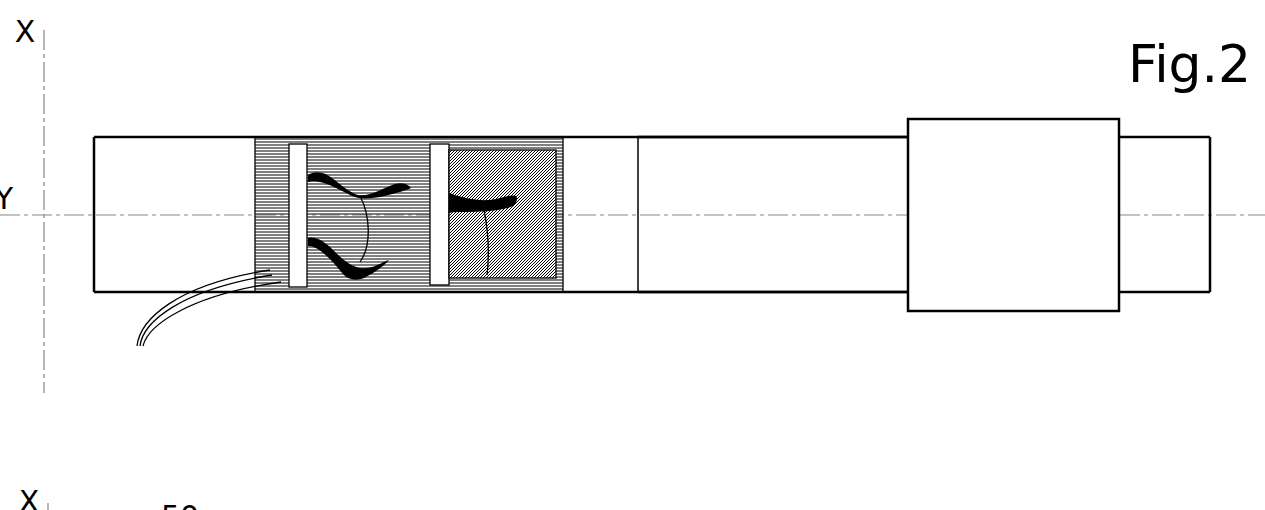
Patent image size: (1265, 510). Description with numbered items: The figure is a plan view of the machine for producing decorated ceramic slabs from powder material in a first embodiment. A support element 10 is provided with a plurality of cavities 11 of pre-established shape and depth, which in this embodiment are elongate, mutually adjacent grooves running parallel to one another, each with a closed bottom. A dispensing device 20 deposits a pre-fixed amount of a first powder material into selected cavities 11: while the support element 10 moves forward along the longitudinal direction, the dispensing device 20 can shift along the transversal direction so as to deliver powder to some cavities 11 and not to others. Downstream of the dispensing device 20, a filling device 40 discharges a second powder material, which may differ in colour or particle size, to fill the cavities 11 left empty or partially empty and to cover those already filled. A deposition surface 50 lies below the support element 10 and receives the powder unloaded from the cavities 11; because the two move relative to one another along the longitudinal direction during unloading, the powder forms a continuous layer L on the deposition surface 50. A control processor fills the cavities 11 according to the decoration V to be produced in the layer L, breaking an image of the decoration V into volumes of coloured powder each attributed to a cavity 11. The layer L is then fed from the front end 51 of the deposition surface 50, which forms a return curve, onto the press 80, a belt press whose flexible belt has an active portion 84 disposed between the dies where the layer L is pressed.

The support element 10 is at (395, 276).
The cavities 11 is at (197, 325).
The dispensing device 20 is at (298, 273).
The filling device 40 is at (443, 281).
The deposition surface 50 is at (166, 173).
The front end 51 is at (632, 276).
The press 80 is at (992, 316).
The active portion 84 is at (745, 265).
The decoration V is at (352, 280).
The layer L is at (537, 263).